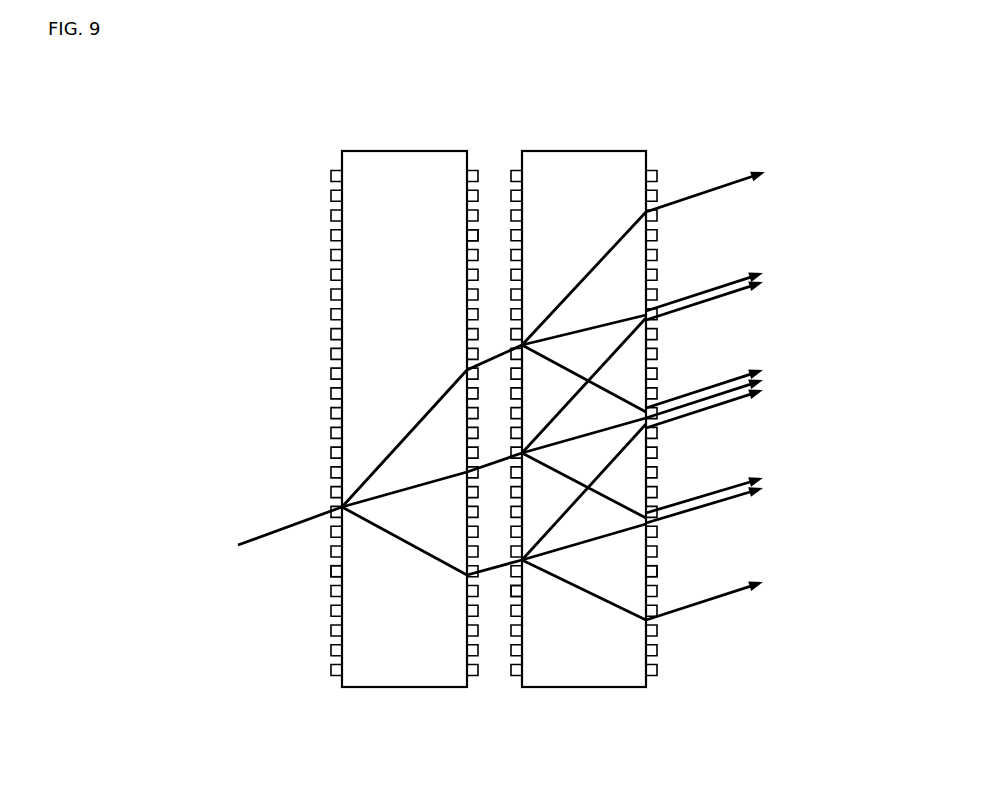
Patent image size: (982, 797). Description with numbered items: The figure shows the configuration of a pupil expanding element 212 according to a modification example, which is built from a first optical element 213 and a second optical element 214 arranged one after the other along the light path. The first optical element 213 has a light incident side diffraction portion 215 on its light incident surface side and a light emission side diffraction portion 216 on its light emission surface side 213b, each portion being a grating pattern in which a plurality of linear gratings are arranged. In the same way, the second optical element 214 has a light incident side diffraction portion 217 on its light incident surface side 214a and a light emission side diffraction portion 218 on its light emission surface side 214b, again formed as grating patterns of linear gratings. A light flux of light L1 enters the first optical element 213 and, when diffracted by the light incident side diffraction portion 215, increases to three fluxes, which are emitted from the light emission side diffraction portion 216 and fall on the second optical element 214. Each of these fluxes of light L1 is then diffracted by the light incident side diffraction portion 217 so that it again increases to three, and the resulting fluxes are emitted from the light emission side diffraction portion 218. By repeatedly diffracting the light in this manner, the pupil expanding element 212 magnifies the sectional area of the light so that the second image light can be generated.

The pupil expanding element 212 is at (742, 123).
The first optical element 213 is at (395, 672).
The light emission surface side 213b is at (479, 187).
The second optical element 214 is at (610, 672).
The light incident surface side 214a is at (510, 638).
The light emission surface side 214b is at (657, 640).
The light incident side diffraction portion 215 is at (334, 571).
The light emission side diffraction portion 216 is at (468, 237).
The light incident side diffraction portion 217 is at (518, 592).
The light emission side diffraction portion 218 is at (657, 574).
The light L1 is at (264, 530).